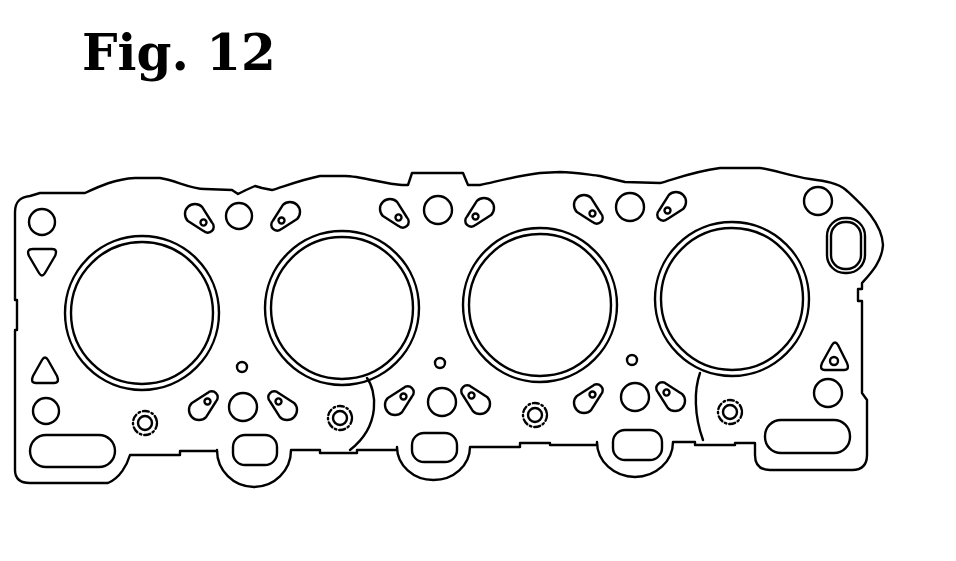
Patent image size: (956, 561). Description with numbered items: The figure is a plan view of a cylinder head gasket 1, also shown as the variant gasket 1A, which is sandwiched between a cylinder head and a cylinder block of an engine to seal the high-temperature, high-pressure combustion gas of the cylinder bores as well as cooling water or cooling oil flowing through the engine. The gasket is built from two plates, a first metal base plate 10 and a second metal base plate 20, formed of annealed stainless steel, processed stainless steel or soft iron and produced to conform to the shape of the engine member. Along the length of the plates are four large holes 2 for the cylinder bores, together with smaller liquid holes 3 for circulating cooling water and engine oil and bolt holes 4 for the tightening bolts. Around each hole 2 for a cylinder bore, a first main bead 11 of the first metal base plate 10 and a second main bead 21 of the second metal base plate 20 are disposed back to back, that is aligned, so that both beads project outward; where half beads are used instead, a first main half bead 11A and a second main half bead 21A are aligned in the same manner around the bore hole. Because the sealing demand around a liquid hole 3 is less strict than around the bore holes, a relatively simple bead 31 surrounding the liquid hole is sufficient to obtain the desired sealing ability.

The metal gasket 1 is at (460, 285).
The metal gasket 1A is at (657, 140).
The hole for cylinder bore 2 is at (153, 352).
The liquid hole 3 is at (147, 431).
The bolt hole 4 is at (821, 201).
The first metal base plate 10 is at (449, 275).
The second metal base plate 20 is at (318, 177).
The first main bead 11 is at (437, 319).
The second main bead 21 is at (682, 446).
The first main half bead 11A is at (437, 319).
The second main half bead 21A is at (322, 231).
The bead 31 is at (547, 414).